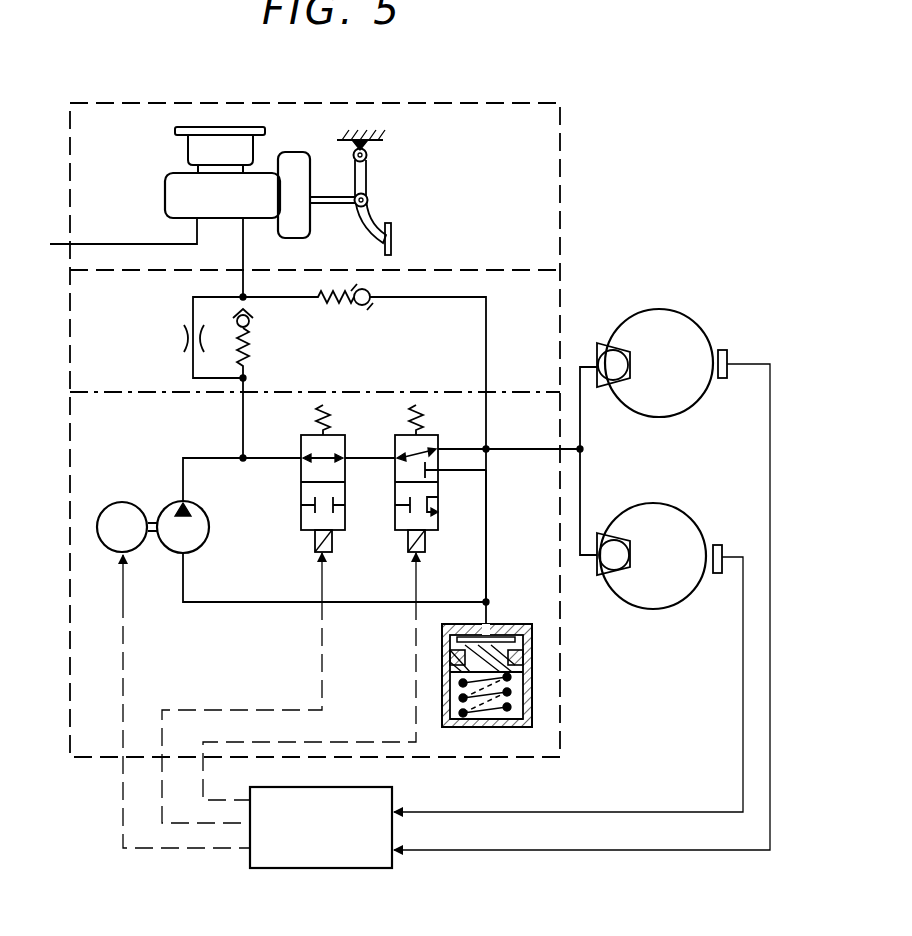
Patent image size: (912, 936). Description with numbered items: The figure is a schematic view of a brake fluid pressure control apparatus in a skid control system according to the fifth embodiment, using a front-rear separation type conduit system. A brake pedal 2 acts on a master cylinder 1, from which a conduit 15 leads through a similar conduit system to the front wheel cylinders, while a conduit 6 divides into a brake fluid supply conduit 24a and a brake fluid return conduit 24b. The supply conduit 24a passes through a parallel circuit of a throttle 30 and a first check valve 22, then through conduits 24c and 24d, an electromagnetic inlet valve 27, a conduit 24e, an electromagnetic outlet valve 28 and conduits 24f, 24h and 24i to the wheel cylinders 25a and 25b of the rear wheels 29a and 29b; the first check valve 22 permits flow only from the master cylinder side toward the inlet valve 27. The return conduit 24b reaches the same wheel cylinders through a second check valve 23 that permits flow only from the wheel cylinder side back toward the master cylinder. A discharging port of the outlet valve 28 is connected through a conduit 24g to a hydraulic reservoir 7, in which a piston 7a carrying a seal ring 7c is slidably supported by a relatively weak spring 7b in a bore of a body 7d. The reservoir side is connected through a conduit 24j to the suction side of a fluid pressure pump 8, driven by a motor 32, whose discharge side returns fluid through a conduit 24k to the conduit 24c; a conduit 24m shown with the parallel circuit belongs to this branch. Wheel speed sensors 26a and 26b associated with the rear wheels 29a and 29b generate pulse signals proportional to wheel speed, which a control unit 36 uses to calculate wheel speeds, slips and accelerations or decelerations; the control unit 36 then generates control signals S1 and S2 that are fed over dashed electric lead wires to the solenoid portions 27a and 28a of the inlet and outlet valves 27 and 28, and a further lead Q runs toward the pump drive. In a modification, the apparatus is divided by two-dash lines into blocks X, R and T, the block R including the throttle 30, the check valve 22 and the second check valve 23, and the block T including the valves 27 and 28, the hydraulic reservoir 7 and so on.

The master cylinder 1 is at (186, 177).
The brake pedal 2 is at (392, 237).
The conduit 6 is at (242, 240).
The hydraulic reservoir 7 is at (482, 644).
The piston 7a is at (470, 660).
The spring 7b is at (463, 700).
The seal ring 7c is at (525, 658).
The body 7d is at (528, 712).
The fluid pressure pump 8 is at (165, 517).
The conduit 15 is at (108, 244).
The first check valve 22 is at (250, 327).
The second check valve 23 is at (368, 303).
The brake fluid supply conduit 24a is at (247, 305).
The brake fluid return conduit 24b is at (364, 439).
The conduit 24c is at (245, 424).
The conduit 24d is at (270, 460).
The conduit 24e is at (365, 460).
The conduit 24f is at (500, 470).
The conduit 24g is at (488, 546).
The conduit 24h is at (582, 432).
The conduit 24i is at (581, 562).
The conduit 24j is at (362, 604).
The conduit 24k is at (190, 457).
The bypass passage 24m is at (193, 306).
The wheel cylinder 25a is at (600, 344).
The wheel cylinder 25b is at (600, 535).
The wheel speed sensor 26a is at (722, 348).
The wheel speed sensor 26b is at (718, 544).
The electromagnetic inlet valve 27 is at (348, 446).
The solenoid portion 27a is at (329, 554).
The electromagnetic outlet valve 28 is at (450, 446).
The solenoid portion 28a is at (419, 554).
The rear wheel 29a is at (652, 312).
The rear wheel 29b is at (648, 512).
The throttle 30 is at (185, 336).
The motor 32 is at (104, 515).
The control unit 36 is at (322, 791).
The block X is at (562, 163).
The block R is at (561, 307).
The motor drive signal Q is at (121, 731).
The block T is at (558, 692).
The control signal S1 is at (320, 686).
The control signal S2 is at (322, 741).